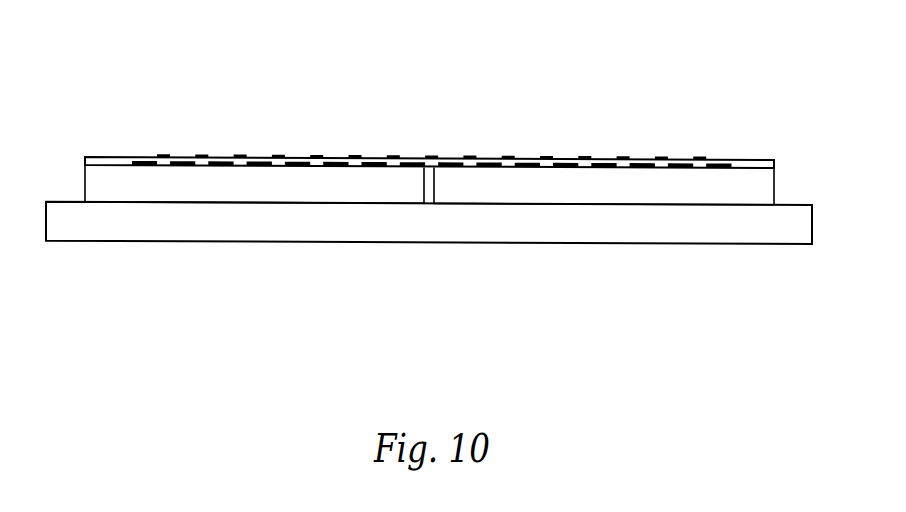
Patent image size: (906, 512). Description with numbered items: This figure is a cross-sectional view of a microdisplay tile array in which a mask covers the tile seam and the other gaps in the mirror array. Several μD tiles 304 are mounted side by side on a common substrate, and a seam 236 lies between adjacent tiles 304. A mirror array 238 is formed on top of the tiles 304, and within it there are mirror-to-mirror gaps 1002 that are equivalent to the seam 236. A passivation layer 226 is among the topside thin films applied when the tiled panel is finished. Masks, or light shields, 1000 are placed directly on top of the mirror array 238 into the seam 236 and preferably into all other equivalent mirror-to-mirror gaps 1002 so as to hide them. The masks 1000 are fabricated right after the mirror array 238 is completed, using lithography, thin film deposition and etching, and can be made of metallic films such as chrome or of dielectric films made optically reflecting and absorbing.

The μD tile 304 is at (188, 218).
The mirror-to-mirror gap 1002 is at (238, 167).
The seam 236 is at (427, 197).
The passivation layer 226 is at (559, 158).
The mirror array 238 is at (265, 157).
The mask 1000 is at (428, 157).